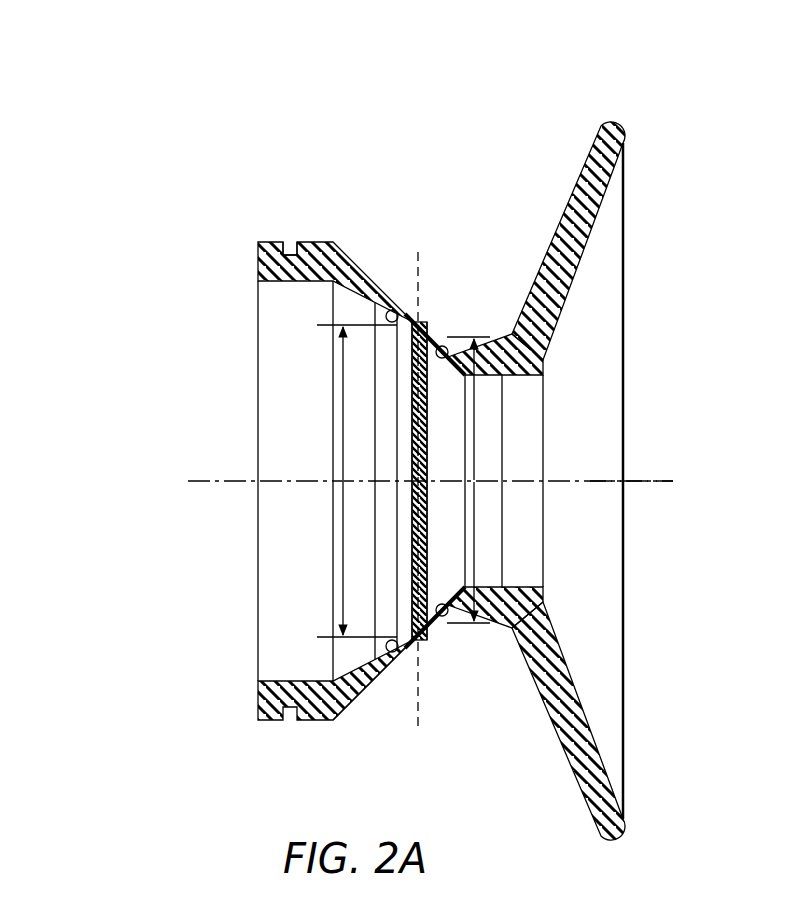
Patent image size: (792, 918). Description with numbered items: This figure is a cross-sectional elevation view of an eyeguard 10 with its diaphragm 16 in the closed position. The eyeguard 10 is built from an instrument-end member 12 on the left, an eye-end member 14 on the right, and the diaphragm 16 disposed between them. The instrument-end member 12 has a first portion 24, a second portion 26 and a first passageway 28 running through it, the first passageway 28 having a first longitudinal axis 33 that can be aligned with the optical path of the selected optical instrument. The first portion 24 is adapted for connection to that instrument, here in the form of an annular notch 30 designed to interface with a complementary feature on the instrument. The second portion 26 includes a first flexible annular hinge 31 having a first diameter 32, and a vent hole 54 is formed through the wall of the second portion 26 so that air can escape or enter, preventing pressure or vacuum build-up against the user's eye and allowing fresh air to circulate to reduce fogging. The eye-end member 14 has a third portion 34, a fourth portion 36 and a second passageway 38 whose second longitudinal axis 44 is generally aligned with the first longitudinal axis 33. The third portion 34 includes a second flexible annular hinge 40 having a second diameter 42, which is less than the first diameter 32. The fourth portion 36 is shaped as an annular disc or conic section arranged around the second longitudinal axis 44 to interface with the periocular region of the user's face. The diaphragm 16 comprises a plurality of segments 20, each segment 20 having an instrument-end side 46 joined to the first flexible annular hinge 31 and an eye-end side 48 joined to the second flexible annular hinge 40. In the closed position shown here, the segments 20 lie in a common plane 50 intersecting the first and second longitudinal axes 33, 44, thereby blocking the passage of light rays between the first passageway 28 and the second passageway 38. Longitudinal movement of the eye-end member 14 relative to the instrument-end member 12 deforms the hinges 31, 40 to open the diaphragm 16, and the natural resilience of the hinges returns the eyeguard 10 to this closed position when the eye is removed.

The eyeguard 10 is at (444, 93).
The instrument-end member 12 is at (407, 193).
The eye-end member 14 is at (505, 168).
The diaphragm 16 is at (412, 553).
The segment 20 is at (427, 465).
The first portion 24 is at (314, 240).
The second portion 26 is at (364, 258).
The first passageway 28 is at (298, 444).
The annular notch 30 is at (284, 252).
The first flexible annular hinge 31 is at (387, 304).
The first diameter 32 is at (357, 481).
The first longitudinal axis 33 is at (290, 482).
The third portion 34 is at (488, 320).
The fourth portion 36 is at (557, 194).
The second passageway 38 is at (585, 447).
The second flexible annular hinge 40 is at (440, 342).
The second diameter 42 is at (472, 480).
The second longitudinal axis 44 is at (592, 482).
The instrument-end side 46 is at (412, 452).
The eye-end side 48 is at (427, 452).
The common plane 50 is at (423, 490).
The vent hole 54 is at (363, 688).